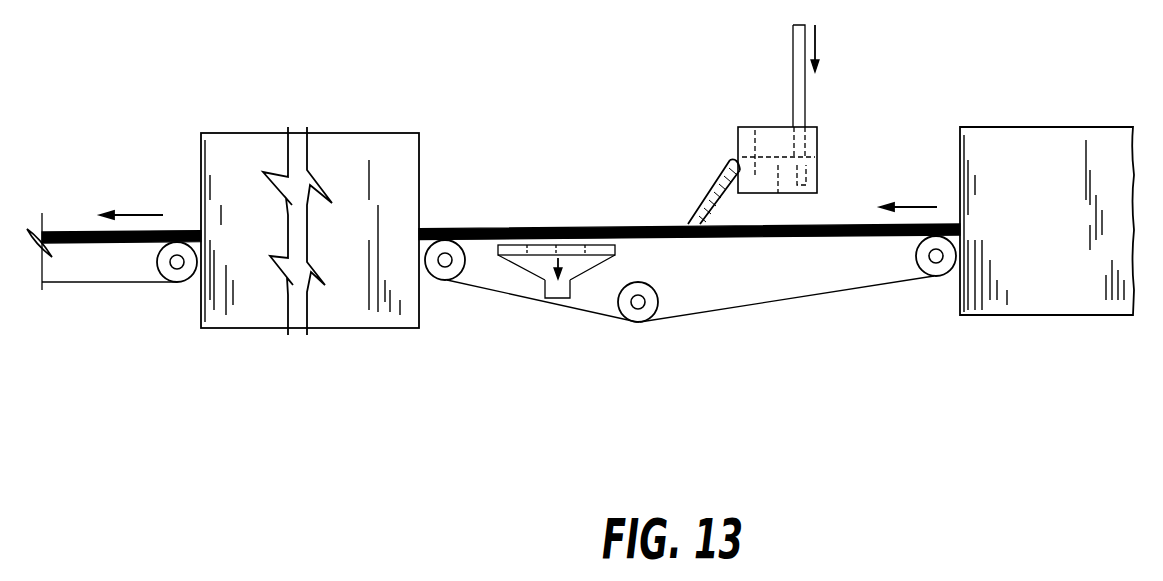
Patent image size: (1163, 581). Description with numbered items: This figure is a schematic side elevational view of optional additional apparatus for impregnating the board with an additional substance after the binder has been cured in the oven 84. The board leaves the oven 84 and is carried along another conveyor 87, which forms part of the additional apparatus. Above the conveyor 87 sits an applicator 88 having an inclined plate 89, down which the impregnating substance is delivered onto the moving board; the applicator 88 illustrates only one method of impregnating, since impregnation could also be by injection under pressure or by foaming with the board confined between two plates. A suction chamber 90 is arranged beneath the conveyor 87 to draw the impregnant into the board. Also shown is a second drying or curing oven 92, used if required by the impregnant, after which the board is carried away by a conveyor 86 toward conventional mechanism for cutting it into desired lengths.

The oven 84 is at (1065, 127).
The conveyor 86 is at (163, 284).
The conveyor 87 is at (885, 284).
The applicator 88 is at (817, 163).
The inclined plate 89 is at (725, 199).
The suction chamber 90 is at (535, 273).
The second drying or curing oven 92 is at (343, 133).